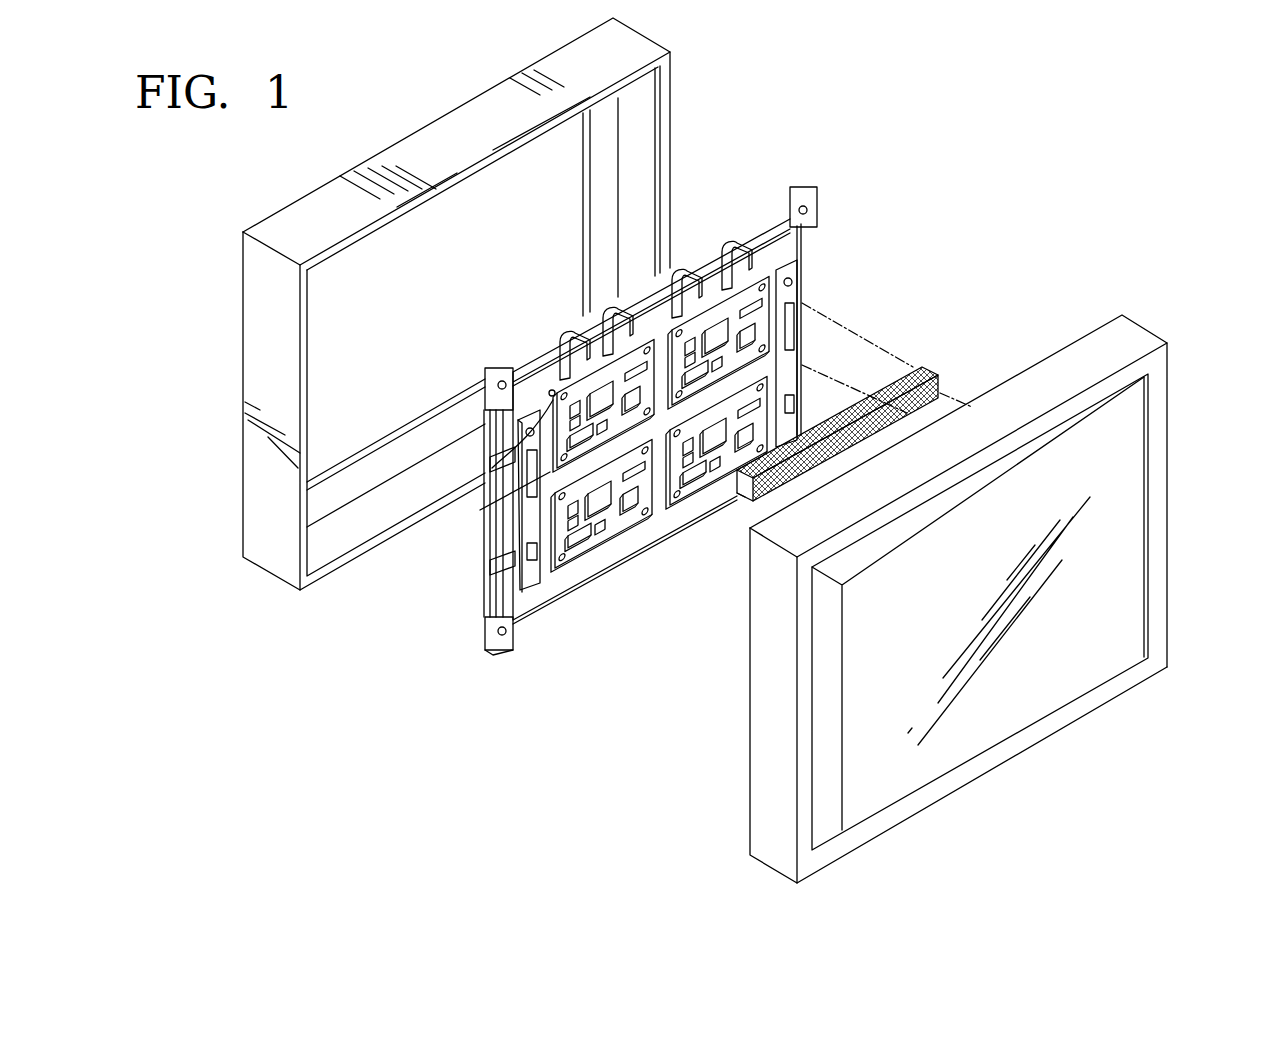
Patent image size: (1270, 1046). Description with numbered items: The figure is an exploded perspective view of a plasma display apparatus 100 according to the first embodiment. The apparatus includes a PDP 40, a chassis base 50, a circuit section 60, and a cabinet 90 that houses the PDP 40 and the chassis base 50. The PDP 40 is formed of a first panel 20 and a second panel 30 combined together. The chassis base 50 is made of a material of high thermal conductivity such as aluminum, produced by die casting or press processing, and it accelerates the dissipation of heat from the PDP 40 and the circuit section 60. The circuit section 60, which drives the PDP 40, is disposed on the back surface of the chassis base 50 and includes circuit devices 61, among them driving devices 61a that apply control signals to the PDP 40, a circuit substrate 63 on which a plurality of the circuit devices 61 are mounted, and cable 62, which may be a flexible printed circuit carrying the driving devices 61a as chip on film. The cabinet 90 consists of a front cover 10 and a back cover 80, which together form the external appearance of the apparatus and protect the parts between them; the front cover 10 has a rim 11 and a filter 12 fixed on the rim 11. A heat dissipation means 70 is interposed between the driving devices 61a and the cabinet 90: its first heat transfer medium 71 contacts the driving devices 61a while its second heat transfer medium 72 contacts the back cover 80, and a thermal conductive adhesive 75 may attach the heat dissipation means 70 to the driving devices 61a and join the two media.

The front cover 10 is at (665, 82).
The rim 11 is at (605, 132).
The filter 12 is at (560, 183).
The first panel 20 is at (762, 212).
The second panel 30 is at (785, 203).
The PDP 40 is at (653, 372).
The chassis base 50 is at (817, 193).
The circuit section 60 is at (566, 428).
The circuit devices 61 is at (491, 471).
The driving devices 61a is at (568, 327).
The cable 62 is at (560, 333).
The circuit substrate 63 is at (520, 498).
The heat dissipation means 70 is at (857, 377).
The first heat transfer medium 71 is at (917, 368).
The second heat transfer medium 72 is at (933, 368).
The thermal conductive adhesive 75 is at (735, 495).
The back cover 80 is at (1103, 335).
The cabinet 90 is at (1100, 240).
The plasma display apparatus 100 is at (1143, 731).